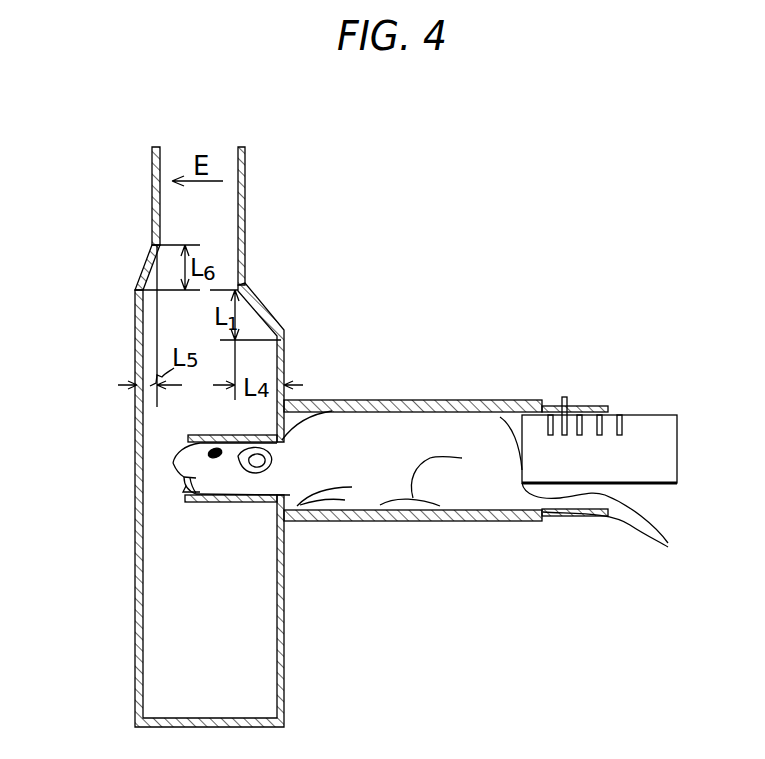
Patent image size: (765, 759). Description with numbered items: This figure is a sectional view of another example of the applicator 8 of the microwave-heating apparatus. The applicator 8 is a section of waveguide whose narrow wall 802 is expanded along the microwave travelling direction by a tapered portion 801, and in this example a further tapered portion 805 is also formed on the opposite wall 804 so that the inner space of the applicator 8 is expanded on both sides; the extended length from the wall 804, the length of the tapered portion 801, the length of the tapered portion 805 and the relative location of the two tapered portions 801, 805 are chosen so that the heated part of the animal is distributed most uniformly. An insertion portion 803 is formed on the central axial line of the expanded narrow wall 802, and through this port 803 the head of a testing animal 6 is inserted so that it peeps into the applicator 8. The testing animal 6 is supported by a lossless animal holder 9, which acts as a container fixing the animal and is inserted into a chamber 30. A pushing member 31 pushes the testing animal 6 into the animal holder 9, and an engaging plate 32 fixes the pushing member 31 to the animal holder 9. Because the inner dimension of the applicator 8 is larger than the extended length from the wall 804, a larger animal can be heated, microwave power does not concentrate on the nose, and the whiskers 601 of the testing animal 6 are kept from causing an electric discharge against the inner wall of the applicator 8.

The applicator 8 is at (135, 638).
The opposite wall 804 is at (153, 198).
The tapered portion 805 is at (148, 268).
The narrow wall 802 is at (243, 208).
The tapered portion 801 is at (262, 306).
The insertion portion 803 is at (241, 498).
The chamber 30 is at (358, 402).
The animal holder 9 is at (601, 410).
The pushing member 31 is at (647, 428).
The engaging plate 32 is at (563, 398).
The testing animal 6 is at (426, 428).
The whiskers 601 is at (192, 490).